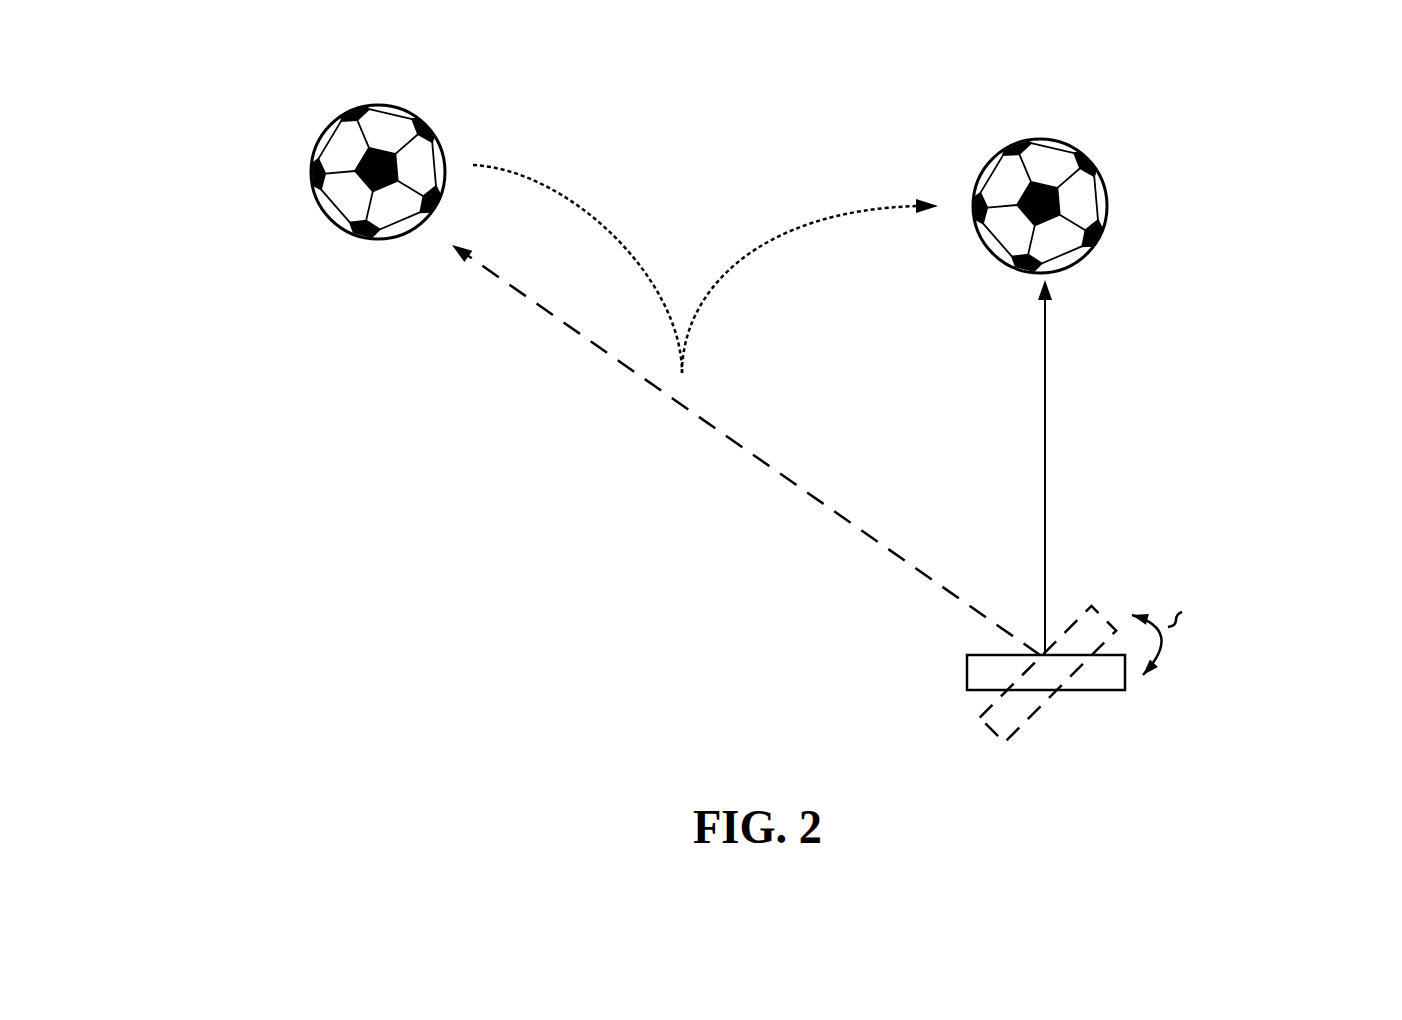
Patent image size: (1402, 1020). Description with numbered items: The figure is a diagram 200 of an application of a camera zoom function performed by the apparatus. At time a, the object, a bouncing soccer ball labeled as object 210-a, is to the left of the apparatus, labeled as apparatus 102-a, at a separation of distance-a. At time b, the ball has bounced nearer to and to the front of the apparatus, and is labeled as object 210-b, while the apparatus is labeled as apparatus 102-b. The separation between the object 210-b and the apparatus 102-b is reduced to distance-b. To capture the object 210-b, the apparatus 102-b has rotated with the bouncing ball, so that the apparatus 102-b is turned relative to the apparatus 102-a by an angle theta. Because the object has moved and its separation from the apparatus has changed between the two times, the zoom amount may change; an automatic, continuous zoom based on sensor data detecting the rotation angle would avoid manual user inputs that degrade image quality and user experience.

The diagram 200 is at (212, 80).
The object at time a 210-a is at (400, 108).
The object at time b 210-b is at (1063, 142).
The apparatus at time a 102-a is at (1110, 620).
The apparatus at time b 102-b is at (1125, 690).
The element distance-a is at (727, 437).
The element distance-b is at (1046, 425).